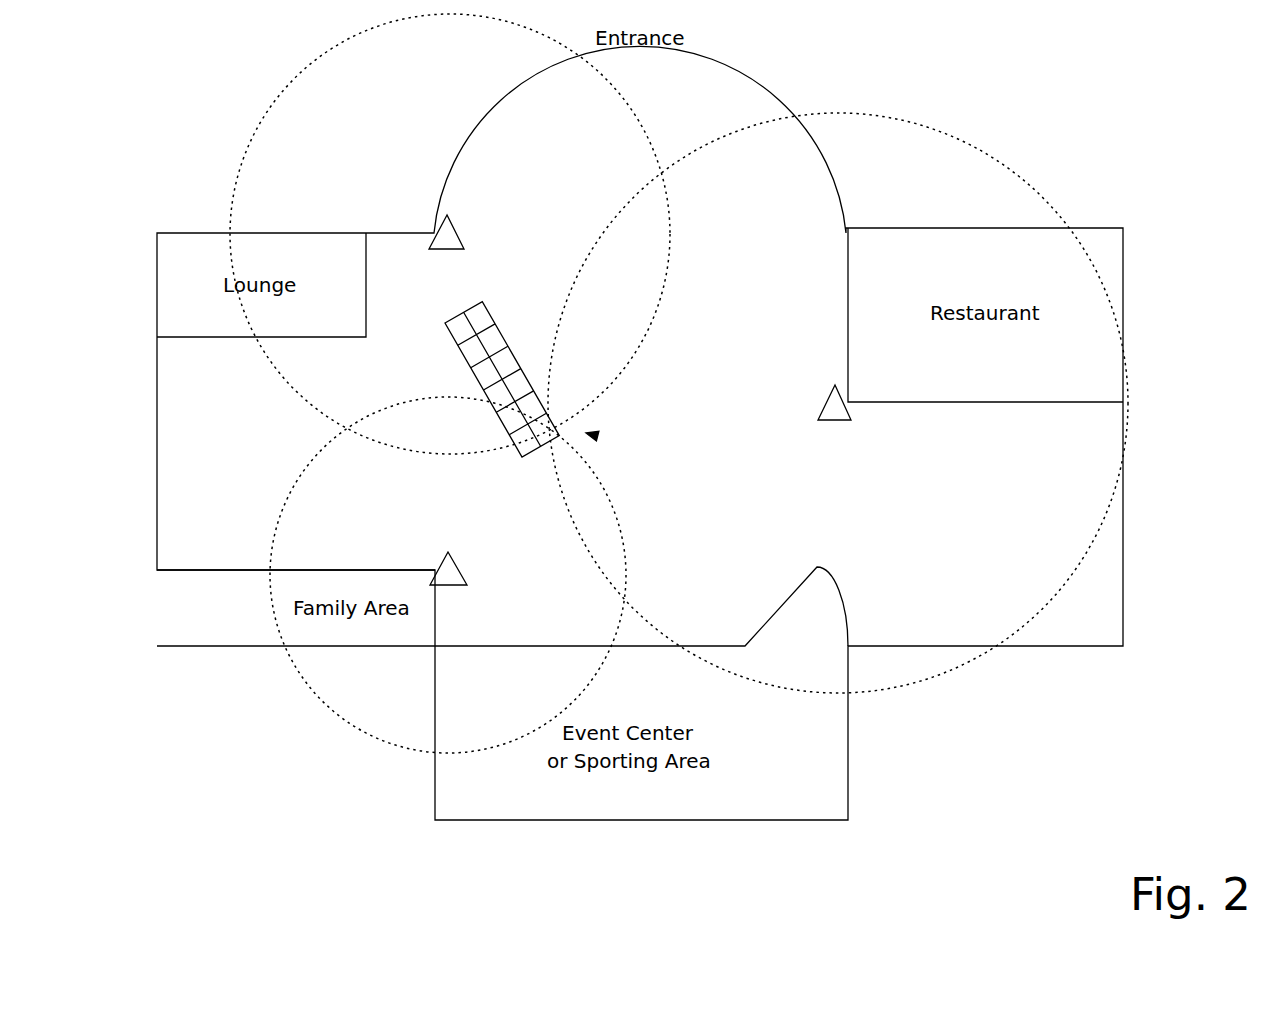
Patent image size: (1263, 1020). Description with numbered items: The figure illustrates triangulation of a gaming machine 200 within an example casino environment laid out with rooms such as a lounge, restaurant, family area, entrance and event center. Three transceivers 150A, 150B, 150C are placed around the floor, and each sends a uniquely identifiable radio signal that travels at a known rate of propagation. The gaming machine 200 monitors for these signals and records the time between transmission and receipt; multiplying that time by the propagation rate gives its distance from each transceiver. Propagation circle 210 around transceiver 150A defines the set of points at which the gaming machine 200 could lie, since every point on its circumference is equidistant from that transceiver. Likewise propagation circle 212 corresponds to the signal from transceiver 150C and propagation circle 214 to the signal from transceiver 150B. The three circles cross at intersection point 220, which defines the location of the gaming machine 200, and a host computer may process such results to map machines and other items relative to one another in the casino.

The transceiver 150A is at (462, 236).
The transceiver 150B is at (834, 422).
The transceiver 150C is at (465, 571).
The gaming machine 200 is at (553, 426).
The propagation circle 210 is at (258, 128).
The propagation circle 212 is at (322, 705).
The propagation circle 214 is at (752, 128).
The intersection point 220 is at (597, 436).